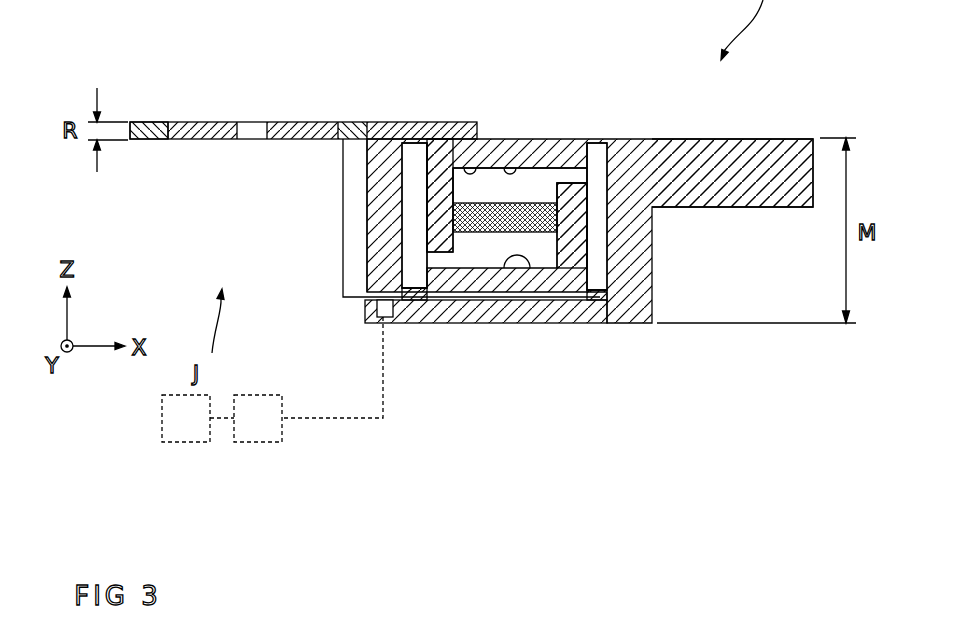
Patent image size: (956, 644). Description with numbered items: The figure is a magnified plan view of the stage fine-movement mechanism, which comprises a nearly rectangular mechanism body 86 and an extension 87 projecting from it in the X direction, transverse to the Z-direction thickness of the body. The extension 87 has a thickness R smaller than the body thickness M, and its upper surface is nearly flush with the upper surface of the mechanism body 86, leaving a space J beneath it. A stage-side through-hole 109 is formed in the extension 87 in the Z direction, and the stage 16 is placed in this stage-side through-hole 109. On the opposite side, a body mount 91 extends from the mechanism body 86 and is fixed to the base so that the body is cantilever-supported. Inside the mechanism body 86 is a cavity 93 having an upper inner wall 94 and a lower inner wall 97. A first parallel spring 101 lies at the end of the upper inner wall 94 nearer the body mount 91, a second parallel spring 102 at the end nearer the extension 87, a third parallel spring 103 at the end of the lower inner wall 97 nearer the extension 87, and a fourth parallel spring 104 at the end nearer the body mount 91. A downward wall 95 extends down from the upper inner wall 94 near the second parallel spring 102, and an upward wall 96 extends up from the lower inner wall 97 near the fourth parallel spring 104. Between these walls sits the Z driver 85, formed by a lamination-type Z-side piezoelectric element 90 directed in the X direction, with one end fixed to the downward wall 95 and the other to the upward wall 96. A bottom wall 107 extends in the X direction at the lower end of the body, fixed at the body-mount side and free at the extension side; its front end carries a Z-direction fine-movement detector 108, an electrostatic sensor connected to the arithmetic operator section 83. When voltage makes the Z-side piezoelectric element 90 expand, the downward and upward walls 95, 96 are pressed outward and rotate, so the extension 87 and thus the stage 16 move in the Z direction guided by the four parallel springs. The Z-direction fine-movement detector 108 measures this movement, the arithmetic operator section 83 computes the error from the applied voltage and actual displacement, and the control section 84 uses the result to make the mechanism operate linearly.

The stage 16 is at (204, 122).
The arithmetic operator section 83 is at (258, 442).
The control section 84 is at (186, 442).
The Z driver 85 is at (531, 186).
The mechanism body 86 is at (617, 139).
The extension 87 is at (347, 121).
The Z-side piezoelectric element 90 is at (543, 233).
The body mount 91 is at (777, 148).
The cavity 93 is at (511, 168).
The upper inner wall 94 is at (466, 168).
The downward wall 95 is at (440, 195).
The upward wall 96 is at (570, 235).
The lower inner wall 97 is at (516, 262).
The first parallel spring 101 is at (597, 143).
The second parallel spring 102 is at (410, 143).
The third parallel spring 103 is at (418, 293).
The fourth parallel spring 104 is at (600, 293).
The bottom wall 107 is at (467, 313).
The Z-direction fine-movement detector 108 is at (382, 317).
The stage-side through-hole 109 is at (180, 141).